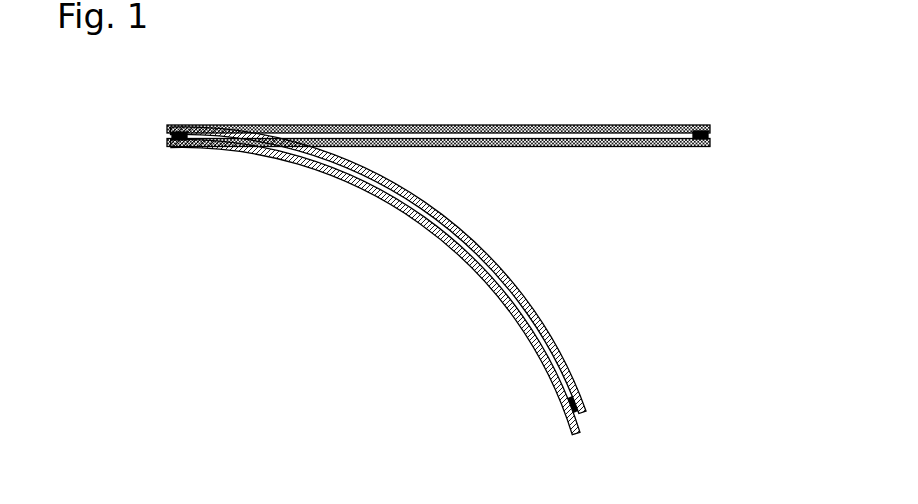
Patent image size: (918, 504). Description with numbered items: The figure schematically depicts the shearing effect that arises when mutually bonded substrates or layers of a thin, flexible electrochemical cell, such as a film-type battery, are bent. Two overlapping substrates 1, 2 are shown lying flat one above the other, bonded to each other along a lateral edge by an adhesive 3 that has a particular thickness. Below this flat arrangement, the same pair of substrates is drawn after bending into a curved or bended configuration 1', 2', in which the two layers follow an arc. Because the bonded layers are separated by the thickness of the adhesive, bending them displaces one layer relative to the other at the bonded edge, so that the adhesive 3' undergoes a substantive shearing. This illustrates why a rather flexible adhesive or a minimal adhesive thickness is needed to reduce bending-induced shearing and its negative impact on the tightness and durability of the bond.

The substrate 1 is at (438, 105).
The substrate 2 is at (438, 171).
The adhesive 3 is at (471, 135).
The bended substrate 1' is at (382, 270).
The bended substrate 2' is at (375, 286).
The sheared adhesive 3' is at (606, 439).